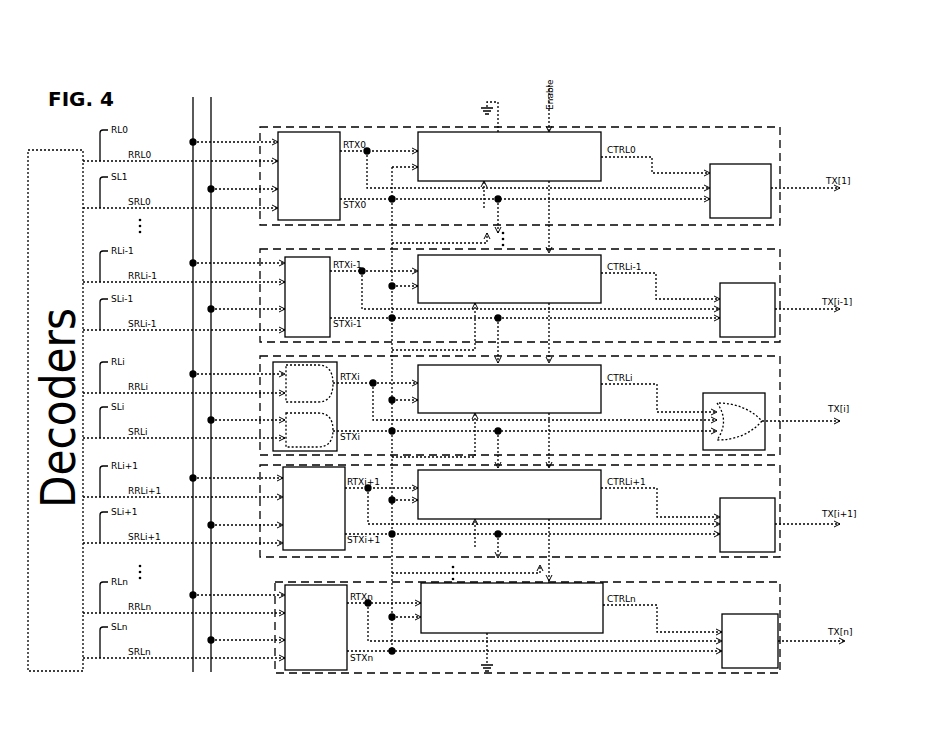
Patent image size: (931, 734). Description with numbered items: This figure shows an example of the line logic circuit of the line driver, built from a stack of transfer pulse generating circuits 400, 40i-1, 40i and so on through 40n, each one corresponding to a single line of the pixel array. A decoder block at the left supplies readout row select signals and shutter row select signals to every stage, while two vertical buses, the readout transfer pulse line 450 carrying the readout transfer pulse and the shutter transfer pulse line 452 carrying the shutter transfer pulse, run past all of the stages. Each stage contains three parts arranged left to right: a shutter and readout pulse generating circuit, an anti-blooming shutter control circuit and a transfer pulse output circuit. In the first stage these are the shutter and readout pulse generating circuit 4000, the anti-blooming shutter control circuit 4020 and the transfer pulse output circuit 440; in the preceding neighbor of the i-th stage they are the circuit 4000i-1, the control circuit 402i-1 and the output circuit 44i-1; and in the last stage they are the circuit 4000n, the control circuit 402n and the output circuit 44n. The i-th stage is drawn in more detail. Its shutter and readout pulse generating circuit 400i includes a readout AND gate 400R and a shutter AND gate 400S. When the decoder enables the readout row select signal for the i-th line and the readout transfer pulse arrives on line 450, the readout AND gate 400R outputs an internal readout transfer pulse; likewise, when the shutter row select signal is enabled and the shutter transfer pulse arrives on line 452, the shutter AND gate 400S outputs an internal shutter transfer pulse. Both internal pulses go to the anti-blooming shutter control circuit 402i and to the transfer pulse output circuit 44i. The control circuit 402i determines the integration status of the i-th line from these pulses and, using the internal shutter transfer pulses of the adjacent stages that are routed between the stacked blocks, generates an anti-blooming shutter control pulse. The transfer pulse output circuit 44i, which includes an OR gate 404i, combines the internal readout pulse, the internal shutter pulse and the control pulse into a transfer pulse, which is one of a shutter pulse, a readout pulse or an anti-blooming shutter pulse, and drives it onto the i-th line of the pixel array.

The readout transfer pulse line 450 is at (193, 130).
The shutter transfer pulse line 452 is at (211, 136).
The transfer pulse generating circuit 400 is at (780, 176).
The transfer pulse generating circuit 40i-1 is at (780, 297).
The transfer pulse generating circuit 40i is at (780, 405).
The transfer pulse generating circuit 40n is at (780, 628).
The shutter and readout pulse generating circuit 4000 is at (309, 176).
The shutter and readout pulse generating circuit 4000i-1 is at (310, 297).
The shutter and readout pulse generating circuit 400i is at (308, 360).
The readout AND gate 400R is at (309, 383).
The shutter AND gate 400S is at (309, 430).
The shutter and readout pulse generating circuit 4000n is at (316, 627).
The anti-blooming shutter control circuit 4020 is at (509, 156).
The anti-blooming shutter control circuit 402i-1 is at (509, 279).
The anti-blooming shutter control circuit 402i is at (509, 389).
The anti-blooming shutter control circuit 402n is at (512, 608).
The transfer pulse output circuit 440 is at (740, 191).
The transfer pulse output circuit 44i-1 is at (747, 310).
The transfer pulse output circuit 44i is at (735, 393).
The transfer pulse output circuit 44n is at (750, 641).
The OR gate 404i is at (739, 421).